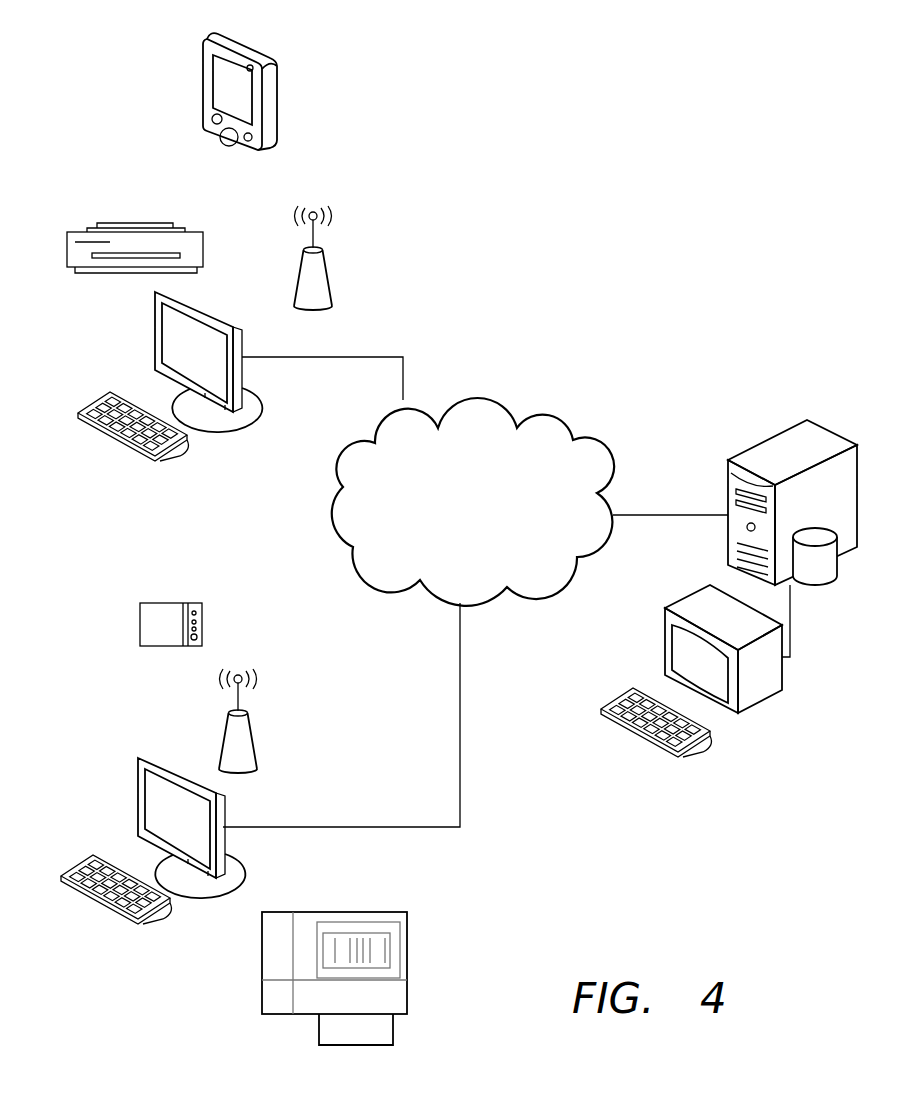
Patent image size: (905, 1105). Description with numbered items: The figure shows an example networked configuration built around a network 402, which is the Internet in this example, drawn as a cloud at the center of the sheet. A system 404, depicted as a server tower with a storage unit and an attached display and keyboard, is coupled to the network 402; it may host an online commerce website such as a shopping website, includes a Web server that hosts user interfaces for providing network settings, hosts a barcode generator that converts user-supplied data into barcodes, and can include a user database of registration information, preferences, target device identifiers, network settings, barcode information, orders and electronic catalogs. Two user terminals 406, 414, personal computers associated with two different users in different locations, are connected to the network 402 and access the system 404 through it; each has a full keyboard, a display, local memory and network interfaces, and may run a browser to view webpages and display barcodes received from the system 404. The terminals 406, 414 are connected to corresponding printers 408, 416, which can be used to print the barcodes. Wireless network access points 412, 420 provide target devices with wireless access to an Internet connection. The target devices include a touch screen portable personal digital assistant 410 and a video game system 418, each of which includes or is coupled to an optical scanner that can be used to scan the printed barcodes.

The network 402 is at (477, 561).
The system 404 is at (803, 437).
The user terminal 406 is at (172, 350).
The printer 408 is at (140, 223).
The target device 410 is at (245, 48).
The wireless network access point 412 is at (318, 280).
The user terminal 414 is at (170, 805).
The printer 416 is at (340, 912).
The target device 418 is at (178, 603).
The wireless network access point 420 is at (245, 742).